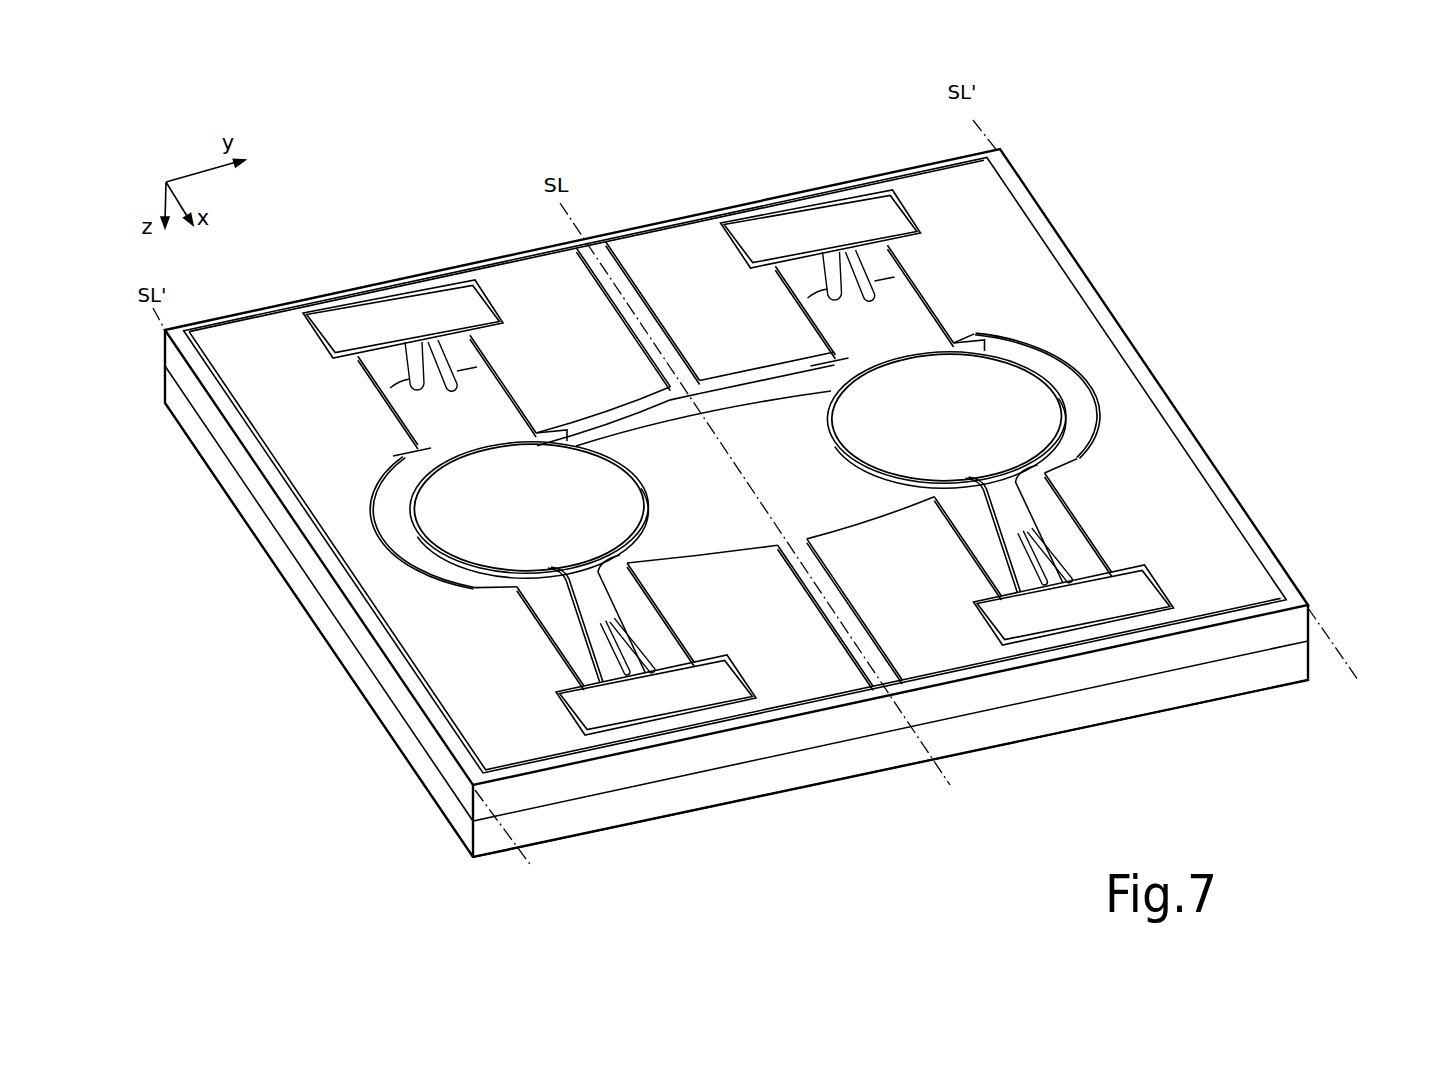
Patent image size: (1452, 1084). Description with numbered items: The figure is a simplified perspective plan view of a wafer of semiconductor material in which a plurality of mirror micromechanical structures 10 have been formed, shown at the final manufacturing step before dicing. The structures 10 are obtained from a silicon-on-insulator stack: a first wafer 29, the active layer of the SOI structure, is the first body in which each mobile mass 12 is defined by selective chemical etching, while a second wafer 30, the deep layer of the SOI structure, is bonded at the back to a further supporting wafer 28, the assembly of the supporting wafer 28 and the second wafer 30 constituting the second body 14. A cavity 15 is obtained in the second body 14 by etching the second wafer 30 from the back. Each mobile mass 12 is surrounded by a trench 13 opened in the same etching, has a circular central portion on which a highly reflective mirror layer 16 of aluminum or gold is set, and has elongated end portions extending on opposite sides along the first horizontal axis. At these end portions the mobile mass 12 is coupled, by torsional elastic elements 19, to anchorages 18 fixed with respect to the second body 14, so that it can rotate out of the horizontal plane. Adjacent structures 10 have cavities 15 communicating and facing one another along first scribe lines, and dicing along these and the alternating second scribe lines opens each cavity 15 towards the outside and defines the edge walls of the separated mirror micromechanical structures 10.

The mirror micromechanical structure 10 is at (333, 283).
The mobile mass 12 is at (1028, 363).
The trench 13 is at (1080, 412).
The second body 14 is at (1312, 645).
The cavity 15 is at (653, 426).
The mirror layer 16 is at (515, 518).
The anchorages 18 is at (1117, 603).
The elastic elements 19 is at (1053, 587).
The supporting wafer 28 is at (1298, 666).
The first wafer 29 is at (1185, 470).
The second wafer 30 is at (1298, 626).